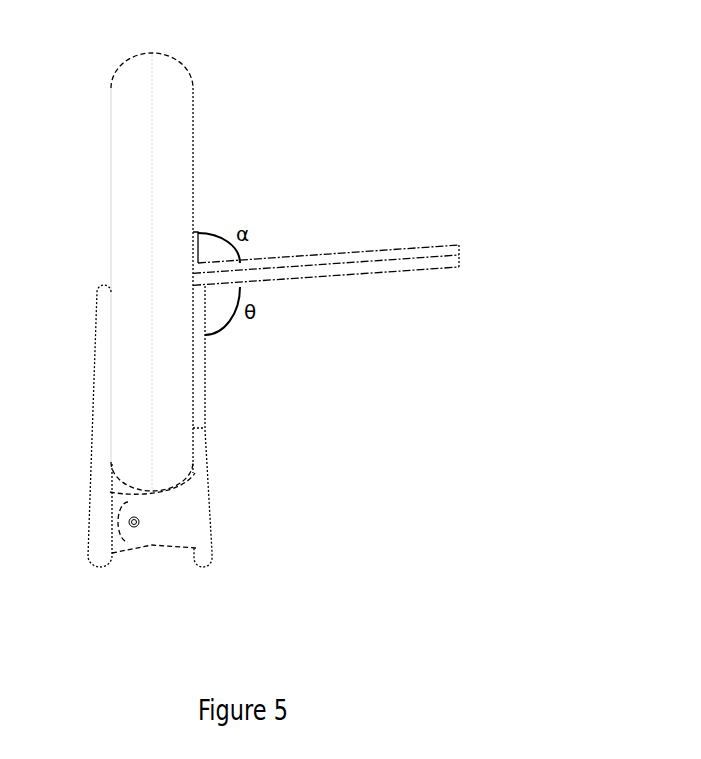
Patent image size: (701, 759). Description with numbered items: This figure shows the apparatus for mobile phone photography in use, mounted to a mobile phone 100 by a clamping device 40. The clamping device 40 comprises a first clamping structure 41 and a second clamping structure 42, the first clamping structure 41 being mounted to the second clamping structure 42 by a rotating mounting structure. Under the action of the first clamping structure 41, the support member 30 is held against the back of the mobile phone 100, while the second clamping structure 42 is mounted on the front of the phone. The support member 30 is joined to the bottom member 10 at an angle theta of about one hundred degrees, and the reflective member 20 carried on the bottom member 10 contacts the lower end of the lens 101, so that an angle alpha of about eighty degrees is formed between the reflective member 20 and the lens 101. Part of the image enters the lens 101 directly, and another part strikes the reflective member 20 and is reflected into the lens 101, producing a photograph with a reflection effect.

The mobile phone 100 is at (175, 92).
The lens 101 is at (199, 232).
The reflective member 20 is at (304, 262).
The bottom member 10 is at (355, 270).
The support member 30 is at (202, 372).
The first clamping structure 41 is at (205, 457).
The second clamping structure 42 is at (100, 412).
The clamping device 40 is at (152, 545).